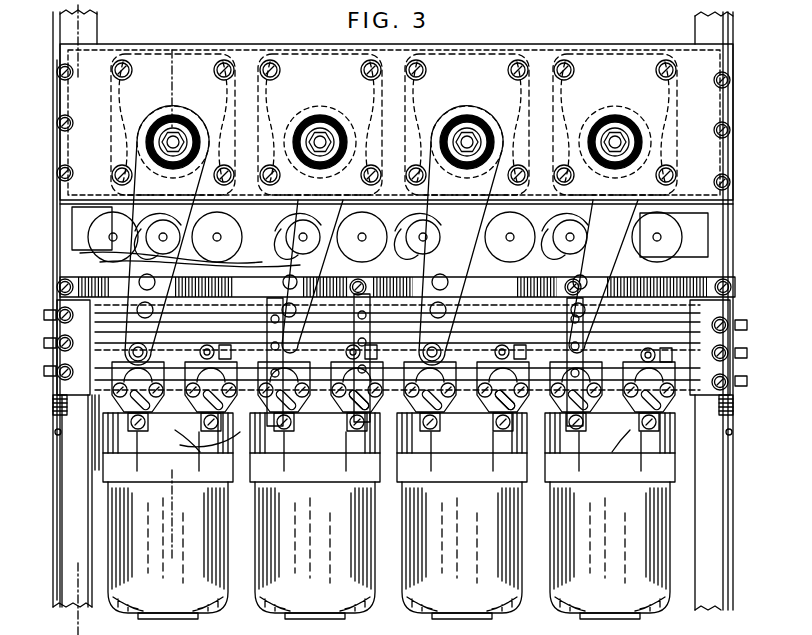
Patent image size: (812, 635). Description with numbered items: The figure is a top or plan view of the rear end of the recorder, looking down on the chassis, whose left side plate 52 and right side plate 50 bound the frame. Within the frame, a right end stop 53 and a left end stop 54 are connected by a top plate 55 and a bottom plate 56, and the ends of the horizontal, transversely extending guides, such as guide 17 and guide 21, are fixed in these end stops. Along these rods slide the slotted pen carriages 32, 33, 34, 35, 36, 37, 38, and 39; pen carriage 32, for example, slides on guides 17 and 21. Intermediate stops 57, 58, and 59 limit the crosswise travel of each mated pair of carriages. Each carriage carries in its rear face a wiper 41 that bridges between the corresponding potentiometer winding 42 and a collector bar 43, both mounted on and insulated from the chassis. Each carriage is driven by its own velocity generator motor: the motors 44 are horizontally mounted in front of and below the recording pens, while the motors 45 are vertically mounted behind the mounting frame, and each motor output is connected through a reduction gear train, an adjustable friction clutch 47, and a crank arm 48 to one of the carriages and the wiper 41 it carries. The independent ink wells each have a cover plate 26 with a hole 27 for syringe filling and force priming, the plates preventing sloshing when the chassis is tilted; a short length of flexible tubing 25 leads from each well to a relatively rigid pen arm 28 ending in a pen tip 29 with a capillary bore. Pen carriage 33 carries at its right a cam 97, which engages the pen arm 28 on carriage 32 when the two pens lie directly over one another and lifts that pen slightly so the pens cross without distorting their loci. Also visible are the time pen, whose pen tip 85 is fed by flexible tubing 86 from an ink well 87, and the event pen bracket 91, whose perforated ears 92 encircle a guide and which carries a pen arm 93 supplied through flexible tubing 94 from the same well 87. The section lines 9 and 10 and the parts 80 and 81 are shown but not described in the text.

The section line 9 is at (74, 27).
The section line 10 is at (168, 87).
The guide 17 is at (332, 403).
The guide 21 is at (476, 403).
The flexible tubing 25 is at (214, 250).
The cover plate 26 is at (122, 250).
The hole 27 is at (235, 250).
The pen arm 28 is at (137, 462).
The pen tip 29 is at (218, 466).
The pen carriage 32 is at (133, 397).
The pen carriage 33 is at (196, 410).
The pen carriage 34 is at (275, 412).
The pen carriage 35 is at (357, 405).
The pen carriage 36 is at (429, 405).
The pen carriage 37 is at (492, 412).
The pen carriage 38 is at (588, 412).
The pen carriage 39 is at (662, 412).
The wiper 41 is at (162, 252).
The potentiometer winding 42 is at (78, 280).
The collector bar 43 is at (318, 256).
The motor 44 is at (205, 575).
The motor 45 is at (292, 50).
The adjustable friction clutch 47 is at (158, 135).
The crank arm 48 is at (150, 149).
The right side plate 50 is at (733, 525).
The left side plate 52 is at (53, 520).
The right end stop 53 is at (748, 360).
The left end stop 54 is at (50, 352).
The top plate 55 is at (58, 305).
The bottom plate 56 is at (54, 345).
The intermediate stop 57 is at (262, 350).
The intermediate stop 58 is at (376, 352).
The intermediate stop 59 is at (518, 352).
The rail clamp 80 is at (53, 407).
The clamp pin 81 is at (54, 431).
The pen tip 85 is at (221, 458).
The flexible tubing 86 is at (80, 253).
The ink well 87 is at (104, 210).
The event pen bracket 91 is at (50, 372).
The perforated ear 92 is at (79, 309).
The pen arm 93 is at (95, 447).
The flexible tubing 94 is at (100, 262).
The cam 97 is at (393, 433).